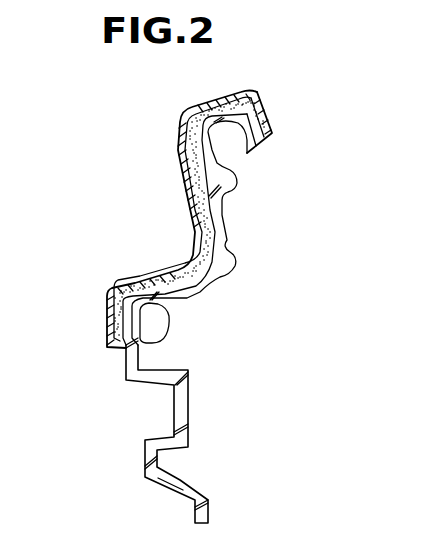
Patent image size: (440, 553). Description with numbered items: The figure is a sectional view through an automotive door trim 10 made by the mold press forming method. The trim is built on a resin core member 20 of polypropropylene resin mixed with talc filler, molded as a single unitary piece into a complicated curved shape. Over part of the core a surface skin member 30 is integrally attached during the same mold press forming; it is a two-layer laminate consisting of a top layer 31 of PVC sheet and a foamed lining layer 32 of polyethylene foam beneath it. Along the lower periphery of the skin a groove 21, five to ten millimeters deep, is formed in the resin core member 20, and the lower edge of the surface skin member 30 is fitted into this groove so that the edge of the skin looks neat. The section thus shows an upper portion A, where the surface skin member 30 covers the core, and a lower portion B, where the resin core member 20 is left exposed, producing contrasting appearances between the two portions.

The automotive door trim 10 is at (295, 137).
The resin core member 20 is at (224, 212).
The groove 21 is at (163, 338).
The surface skin member 30 is at (155, 219).
The top layer 31 is at (183, 119).
The foamed lining layer 32 is at (186, 157).
The upper portion A is at (143, 282).
The lower portion B is at (123, 382).